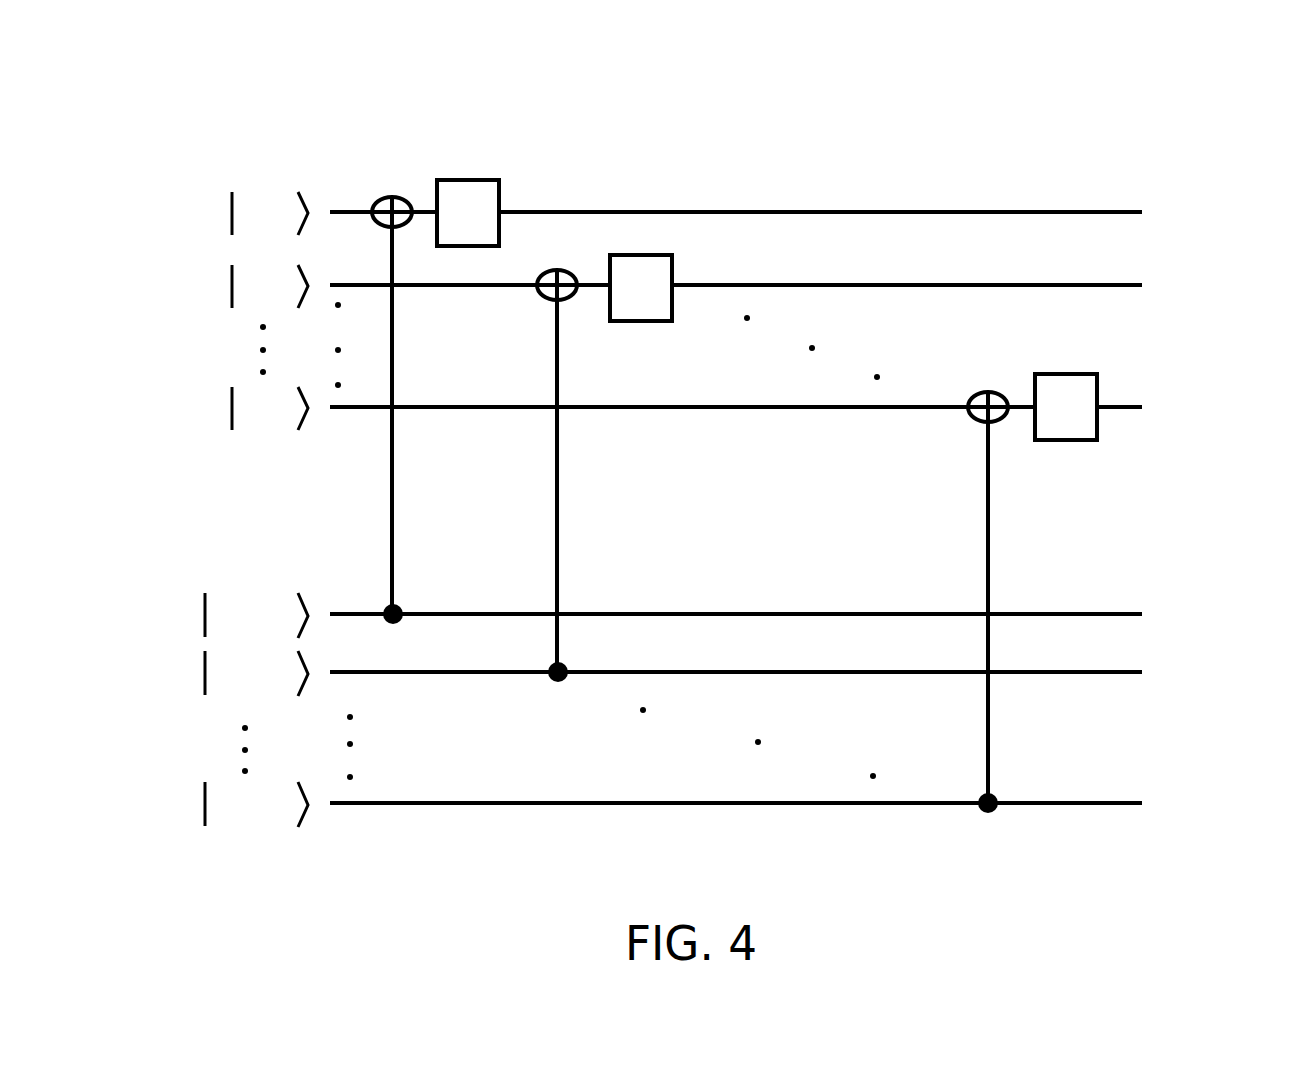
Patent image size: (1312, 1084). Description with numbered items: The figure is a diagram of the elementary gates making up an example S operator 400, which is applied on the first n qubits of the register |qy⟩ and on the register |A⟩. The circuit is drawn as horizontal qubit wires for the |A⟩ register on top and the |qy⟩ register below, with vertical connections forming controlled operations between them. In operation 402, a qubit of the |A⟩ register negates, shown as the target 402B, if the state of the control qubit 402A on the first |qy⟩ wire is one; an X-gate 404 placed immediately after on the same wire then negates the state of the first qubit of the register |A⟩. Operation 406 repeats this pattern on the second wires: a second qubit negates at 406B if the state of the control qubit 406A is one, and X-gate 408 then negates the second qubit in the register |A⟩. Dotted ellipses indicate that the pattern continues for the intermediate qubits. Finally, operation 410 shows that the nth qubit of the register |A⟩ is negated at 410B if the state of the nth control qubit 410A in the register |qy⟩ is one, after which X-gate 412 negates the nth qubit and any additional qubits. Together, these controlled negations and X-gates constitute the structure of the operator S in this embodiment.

The S operator 400 is at (1168, 94).
The operation 402 is at (372, 464).
The control qubit 402A is at (358, 598).
The negated qubit 402B is at (374, 168).
The X-gate 404 is at (473, 152).
The operation 406 is at (576, 504).
The control qubit 406A is at (543, 688).
The negated second qubit 406B is at (575, 248).
The X-gate 408 is at (693, 241).
The operation 410 is at (1009, 535).
The nth control qubit 410A is at (1003, 824).
The negated nth qubit 410B is at (995, 375).
The X-gate 412 is at (1110, 355).